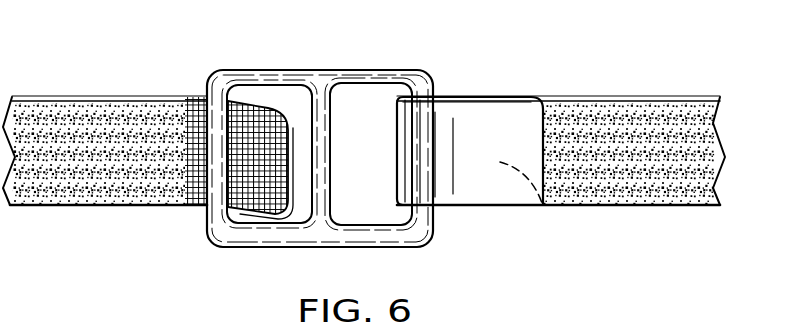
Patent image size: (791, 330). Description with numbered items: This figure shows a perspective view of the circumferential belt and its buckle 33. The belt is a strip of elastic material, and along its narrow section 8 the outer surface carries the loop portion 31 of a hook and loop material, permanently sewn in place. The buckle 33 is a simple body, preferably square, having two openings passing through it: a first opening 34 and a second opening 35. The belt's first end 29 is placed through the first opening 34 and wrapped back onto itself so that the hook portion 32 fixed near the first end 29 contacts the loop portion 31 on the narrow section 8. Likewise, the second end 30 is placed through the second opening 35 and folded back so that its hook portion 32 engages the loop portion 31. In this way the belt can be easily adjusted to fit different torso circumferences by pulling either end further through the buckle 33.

The narrow section 8 is at (364, 156).
The first end 29 is at (388, 163).
The second end 30 is at (488, 130).
The loop portion 31 is at (100, 190).
The hook portion 32 is at (252, 127).
The buckle 33 is at (320, 140).
The first opening 34 is at (290, 92).
The second opening 35 is at (370, 102).